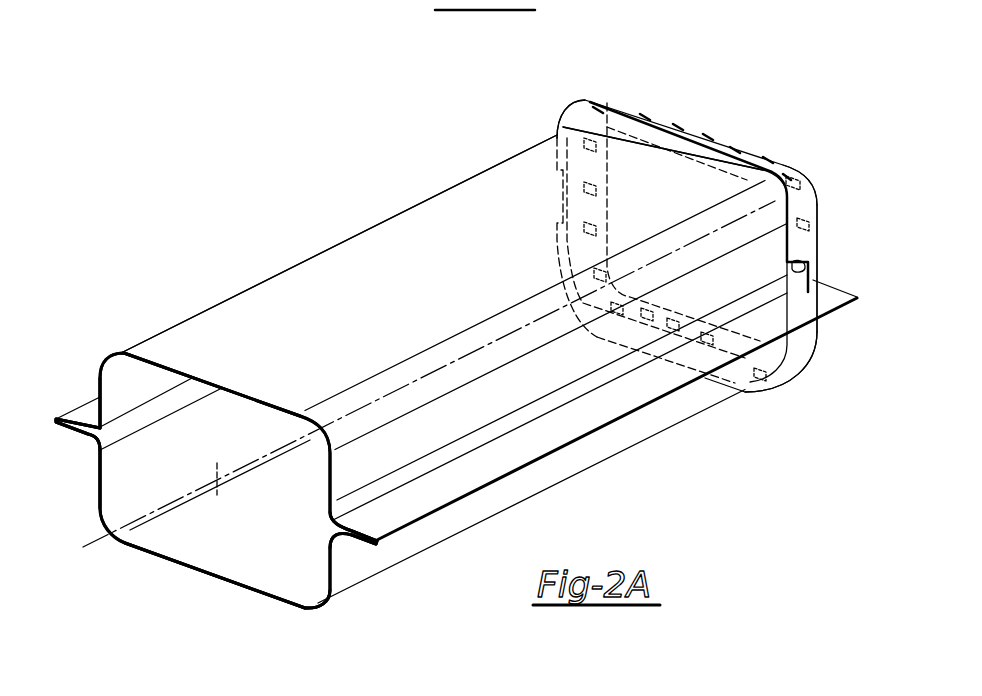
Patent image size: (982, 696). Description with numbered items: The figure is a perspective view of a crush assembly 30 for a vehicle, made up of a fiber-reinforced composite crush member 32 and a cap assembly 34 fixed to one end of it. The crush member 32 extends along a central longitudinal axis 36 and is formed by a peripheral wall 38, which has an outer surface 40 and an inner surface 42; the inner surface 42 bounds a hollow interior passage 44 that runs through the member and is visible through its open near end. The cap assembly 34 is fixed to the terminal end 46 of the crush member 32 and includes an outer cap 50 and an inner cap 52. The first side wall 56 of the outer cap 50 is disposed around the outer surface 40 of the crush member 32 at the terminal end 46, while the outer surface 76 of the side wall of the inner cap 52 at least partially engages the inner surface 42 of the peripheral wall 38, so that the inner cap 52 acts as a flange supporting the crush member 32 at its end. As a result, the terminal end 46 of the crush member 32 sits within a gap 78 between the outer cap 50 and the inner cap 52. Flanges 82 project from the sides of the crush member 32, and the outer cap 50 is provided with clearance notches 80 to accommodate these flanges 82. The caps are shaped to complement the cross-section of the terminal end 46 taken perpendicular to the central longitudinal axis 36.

The crush assembly 30 is at (703, 43).
The crush member 32 is at (330, 245).
The cap assembly 34 is at (838, 235).
The central longitudinal axis 36 is at (86, 549).
The peripheral wall 38 is at (283, 606).
The outer surface 40 is at (442, 222).
The inner surface 42 is at (248, 572).
The hollow interior passage 44 is at (125, 476).
The terminal end 46 is at (548, 110).
The outer cap 50 is at (786, 168).
The inner cap 52 is at (722, 160).
The first side wall 56 is at (667, 125).
The outer surface of the second side wall 76 is at (682, 150).
The gap 78 is at (584, 100).
The clearance notches 80 is at (806, 275).
The flanges 82 is at (82, 412).